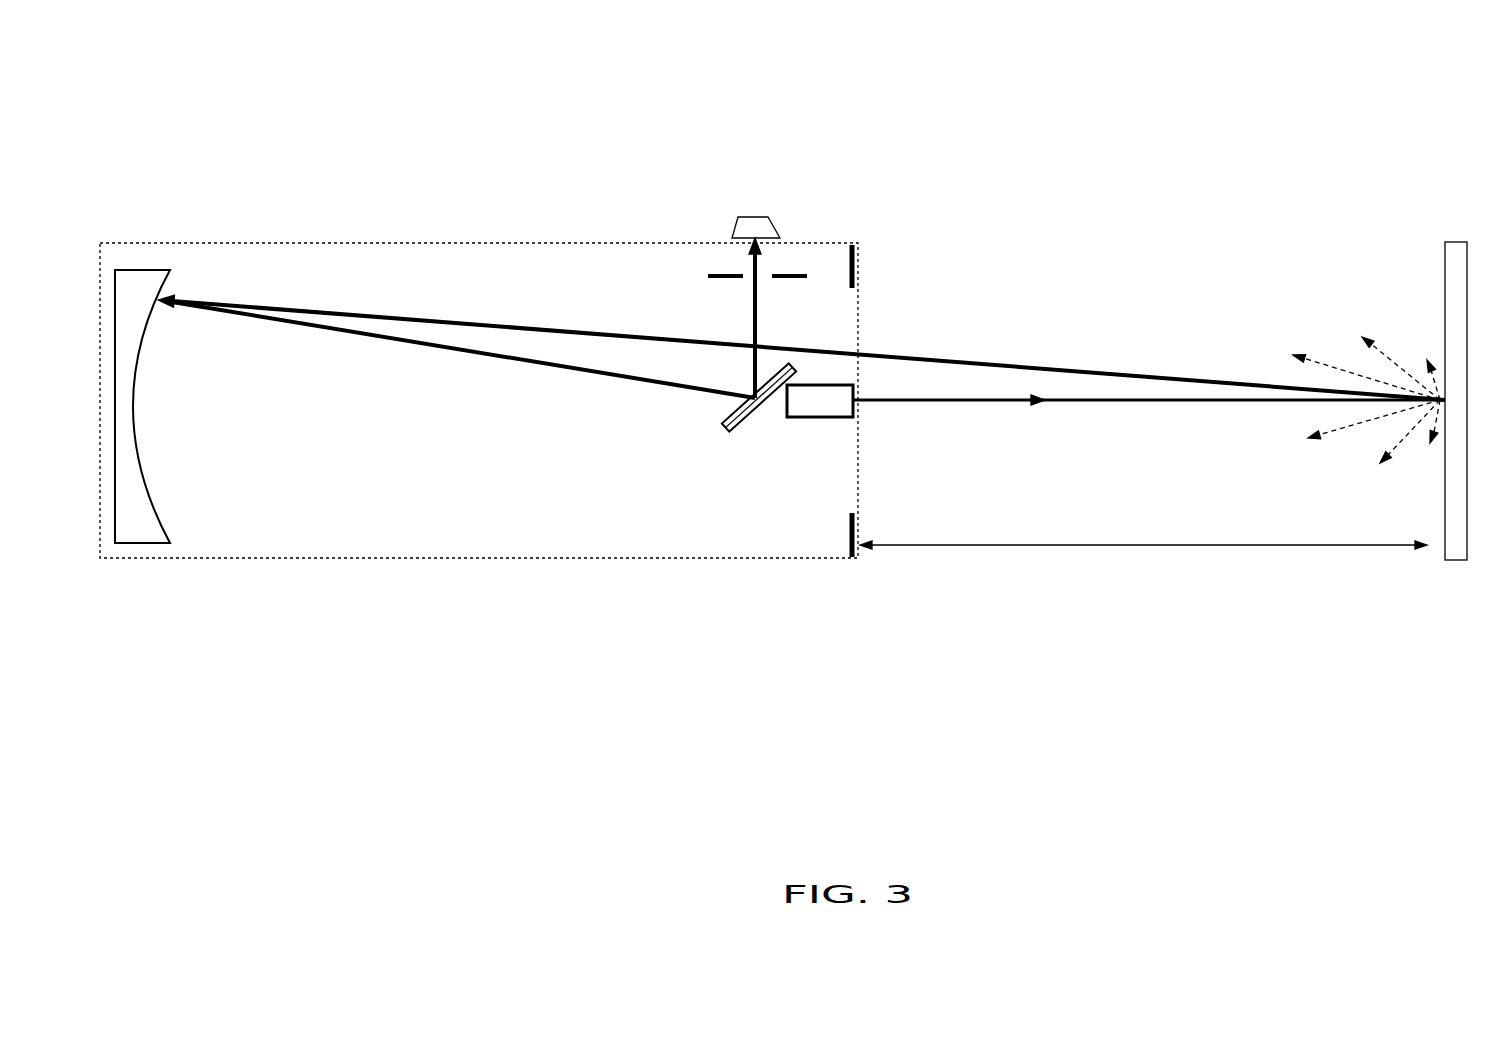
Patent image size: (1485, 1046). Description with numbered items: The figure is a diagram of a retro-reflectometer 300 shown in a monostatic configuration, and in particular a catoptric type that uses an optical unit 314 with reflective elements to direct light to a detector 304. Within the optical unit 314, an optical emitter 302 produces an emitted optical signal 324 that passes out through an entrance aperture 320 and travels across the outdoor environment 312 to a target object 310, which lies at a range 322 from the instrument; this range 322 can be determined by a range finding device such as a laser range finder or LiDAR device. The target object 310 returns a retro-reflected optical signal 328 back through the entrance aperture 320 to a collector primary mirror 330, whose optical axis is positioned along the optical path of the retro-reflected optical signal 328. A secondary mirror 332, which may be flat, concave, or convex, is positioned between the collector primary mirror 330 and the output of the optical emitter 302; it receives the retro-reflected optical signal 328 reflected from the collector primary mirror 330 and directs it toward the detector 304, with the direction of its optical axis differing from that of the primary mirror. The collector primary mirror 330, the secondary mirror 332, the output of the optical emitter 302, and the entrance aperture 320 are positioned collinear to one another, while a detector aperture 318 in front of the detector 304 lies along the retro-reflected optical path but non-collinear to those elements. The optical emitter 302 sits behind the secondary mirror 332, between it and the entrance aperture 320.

The retro-reflectometer 300 is at (182, 47).
The optical emitter 302 is at (797, 440).
The detector 304 is at (785, 288).
The target object 310 is at (1351, 373).
The outdoor environment 312 is at (776, 67).
The optical unit 314 is at (308, 232).
The detector aperture 318 is at (701, 265).
The entrance aperture 320 is at (920, 583).
The range 322 is at (1143, 564).
The emitted optical signal 324 is at (1193, 415).
The retro-reflected optical signal 328 is at (1118, 350).
The collector primary mirror 330 is at (155, 553).
The secondary mirror 332 is at (722, 450).